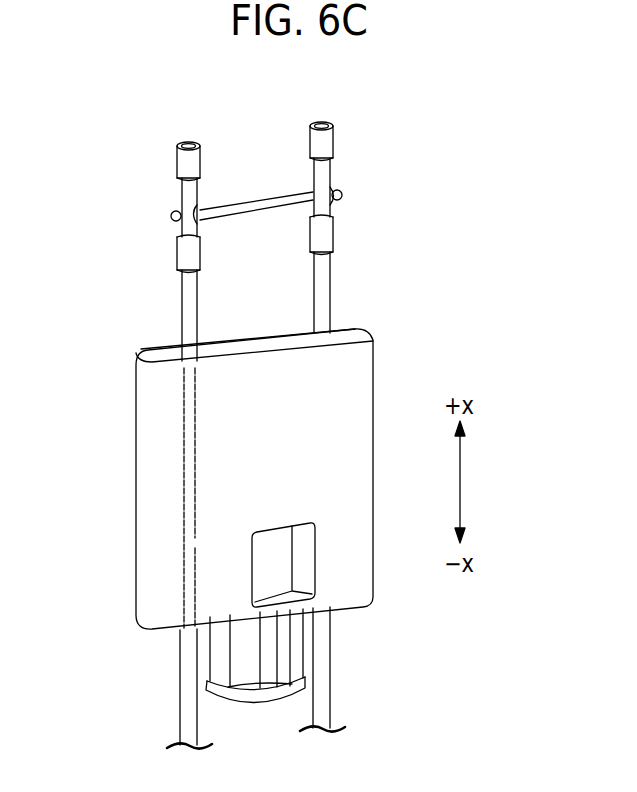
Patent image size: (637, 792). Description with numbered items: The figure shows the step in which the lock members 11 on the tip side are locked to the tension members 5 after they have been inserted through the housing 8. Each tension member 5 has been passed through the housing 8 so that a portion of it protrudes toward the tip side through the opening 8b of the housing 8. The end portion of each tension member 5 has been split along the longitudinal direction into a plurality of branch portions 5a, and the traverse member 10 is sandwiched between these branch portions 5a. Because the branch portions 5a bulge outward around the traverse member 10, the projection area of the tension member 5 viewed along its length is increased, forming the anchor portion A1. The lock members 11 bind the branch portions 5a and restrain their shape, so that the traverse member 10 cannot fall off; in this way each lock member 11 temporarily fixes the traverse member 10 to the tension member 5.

The housing 8 is at (148, 483).
The opening 8b is at (347, 333).
The tension member 5 is at (191, 706).
The branch portion 5a is at (188, 190).
The lock member 11 is at (187, 162).
The traverse member 10 is at (263, 206).
The anchor portion A1 is at (169, 216).